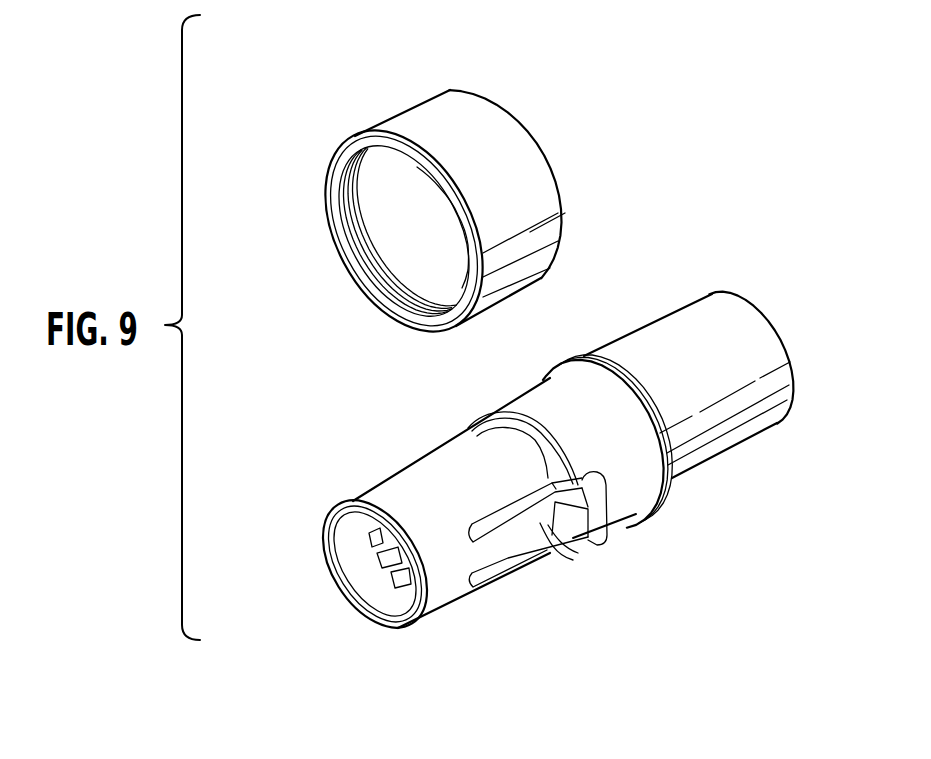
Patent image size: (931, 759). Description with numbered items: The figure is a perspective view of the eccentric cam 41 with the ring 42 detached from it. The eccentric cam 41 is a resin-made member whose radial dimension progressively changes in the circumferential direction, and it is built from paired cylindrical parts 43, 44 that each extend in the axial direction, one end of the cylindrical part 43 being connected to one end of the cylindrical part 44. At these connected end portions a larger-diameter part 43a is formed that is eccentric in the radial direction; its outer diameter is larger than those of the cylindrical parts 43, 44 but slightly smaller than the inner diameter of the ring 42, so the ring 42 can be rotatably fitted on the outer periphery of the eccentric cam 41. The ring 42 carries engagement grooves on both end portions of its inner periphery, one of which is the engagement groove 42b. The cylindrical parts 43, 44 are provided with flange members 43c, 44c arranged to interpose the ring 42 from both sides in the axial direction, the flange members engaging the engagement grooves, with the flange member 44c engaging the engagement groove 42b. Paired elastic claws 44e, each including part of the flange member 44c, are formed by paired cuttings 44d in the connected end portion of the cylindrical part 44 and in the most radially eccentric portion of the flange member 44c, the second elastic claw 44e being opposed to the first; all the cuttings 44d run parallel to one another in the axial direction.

The eccentric cam 41 is at (608, 332).
The ring 42 is at (466, 100).
The engagement groove 42b is at (380, 271).
The cylindrical part 43 is at (698, 312).
The larger-diameter part 43a is at (625, 495).
The flange member 43c is at (663, 503).
The cylindrical part 44 is at (418, 463).
The flange member 44c is at (578, 518).
The cuttings 44d is at (508, 520).
The elastic claw 44e is at (540, 527).